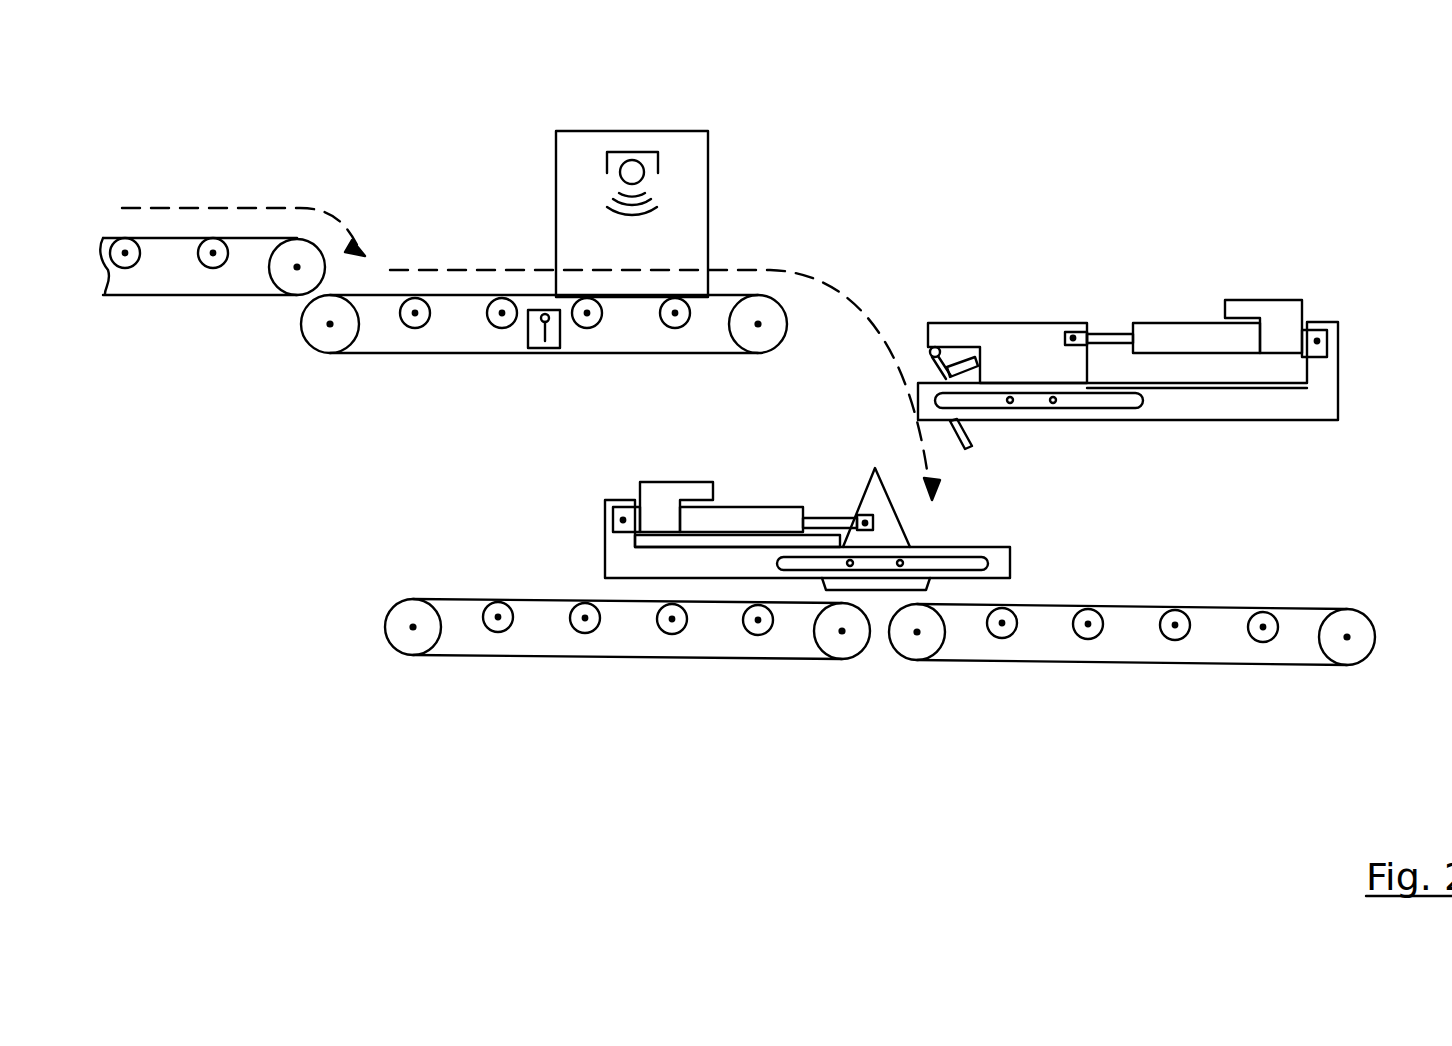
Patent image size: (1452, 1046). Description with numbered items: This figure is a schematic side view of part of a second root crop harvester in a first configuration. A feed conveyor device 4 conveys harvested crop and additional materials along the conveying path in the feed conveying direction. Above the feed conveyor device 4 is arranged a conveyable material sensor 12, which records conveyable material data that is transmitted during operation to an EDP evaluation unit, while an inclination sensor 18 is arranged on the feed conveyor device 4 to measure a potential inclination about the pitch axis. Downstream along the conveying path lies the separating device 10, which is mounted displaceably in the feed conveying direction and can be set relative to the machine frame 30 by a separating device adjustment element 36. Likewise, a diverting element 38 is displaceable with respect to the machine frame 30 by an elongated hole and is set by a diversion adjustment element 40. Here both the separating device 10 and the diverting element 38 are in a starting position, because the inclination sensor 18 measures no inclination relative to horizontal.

The feed conveyor device 4 is at (460, 295).
The conveyable material sensor 12 is at (632, 172).
The inclination sensor 18 is at (552, 340).
The separating device 10 is at (1003, 343).
The separating device adjustment element 36 is at (1170, 343).
The machine frame 30 is at (1327, 400).
The diverting element 38 is at (885, 530).
The diversion adjustment element 40 is at (718, 523).